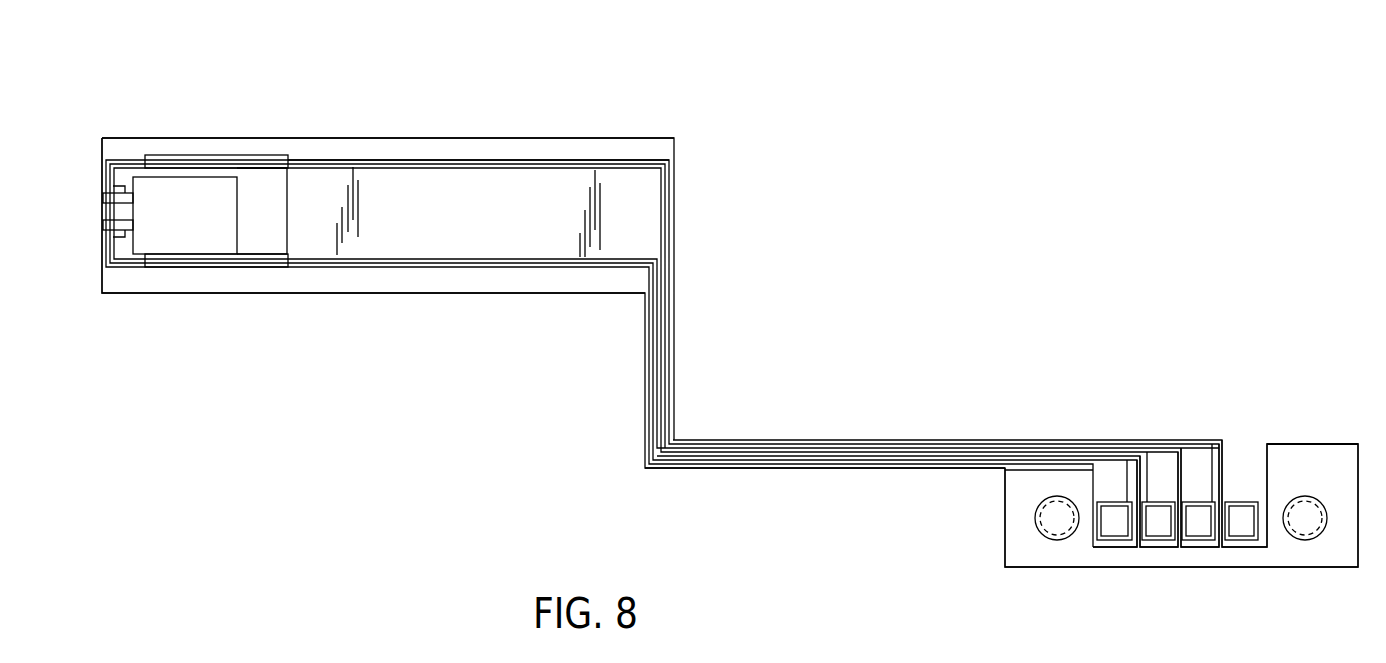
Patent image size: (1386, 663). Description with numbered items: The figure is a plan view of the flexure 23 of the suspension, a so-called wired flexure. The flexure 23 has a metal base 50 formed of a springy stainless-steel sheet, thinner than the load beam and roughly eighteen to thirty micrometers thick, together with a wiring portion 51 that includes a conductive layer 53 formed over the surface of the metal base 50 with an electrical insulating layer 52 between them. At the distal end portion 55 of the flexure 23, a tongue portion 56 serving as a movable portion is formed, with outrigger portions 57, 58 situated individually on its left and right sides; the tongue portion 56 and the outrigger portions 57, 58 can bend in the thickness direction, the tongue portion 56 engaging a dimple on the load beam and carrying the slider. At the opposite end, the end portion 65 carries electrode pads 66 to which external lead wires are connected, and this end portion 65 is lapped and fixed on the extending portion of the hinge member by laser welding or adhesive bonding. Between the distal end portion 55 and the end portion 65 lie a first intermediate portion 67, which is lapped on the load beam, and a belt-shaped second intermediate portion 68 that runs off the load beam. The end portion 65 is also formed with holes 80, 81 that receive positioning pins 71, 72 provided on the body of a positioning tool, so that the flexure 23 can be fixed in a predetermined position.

The flexure 23 is at (651, 134).
The metal base 50 is at (389, 284).
The wiring portion 51 is at (522, 158).
The electrical insulating layer 52 is at (1250, 452).
The conductive layer 53 is at (1205, 447).
The distal end portion 55 is at (103, 216).
The tongue portion 56 is at (215, 183).
The outrigger portion 57 is at (163, 152).
The outrigger portion 58 is at (195, 271).
The end portion 65 is at (1310, 452).
The electrode pads 66 is at (1238, 530).
The first intermediate portion 67 is at (388, 155).
The second intermediate portion 68 is at (851, 441).
The positioning pin 71 is at (1296, 530).
The positioning pin 72 is at (1046, 530).
The hole 80 is at (1312, 530).
The hole 81 is at (1066, 530).